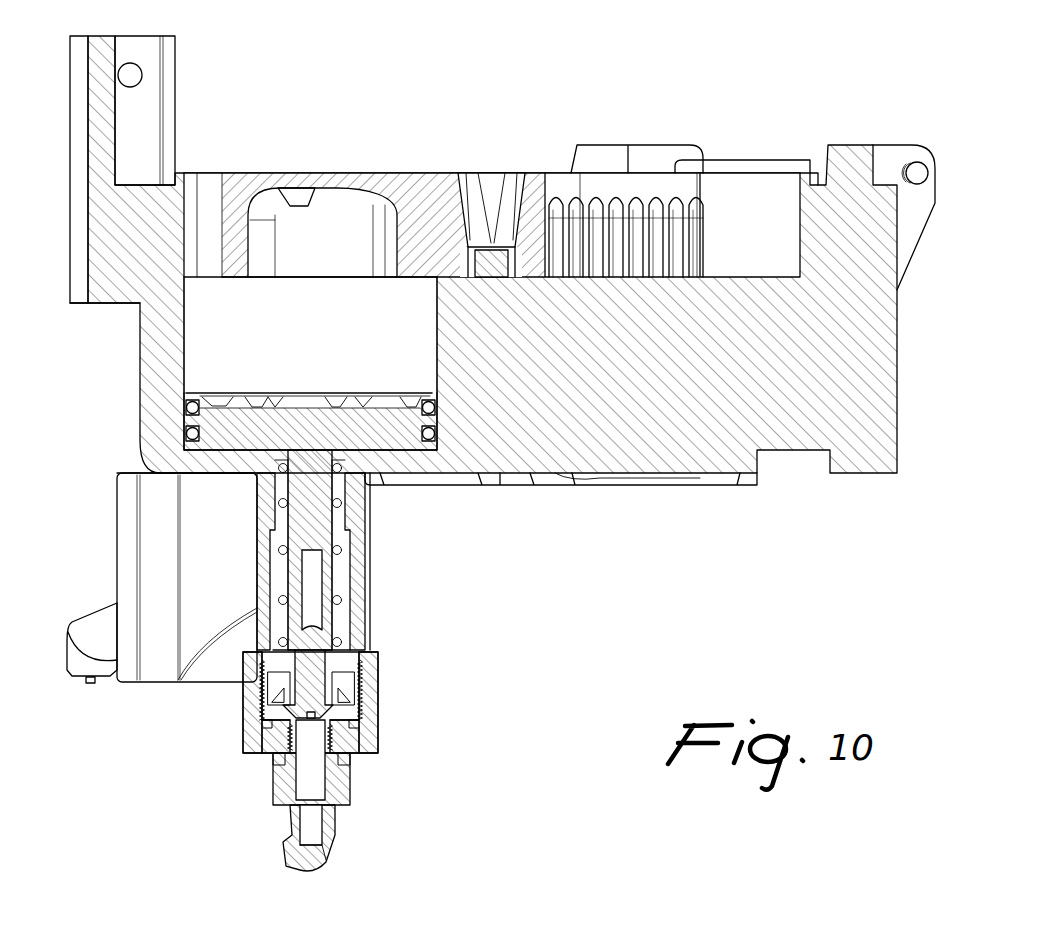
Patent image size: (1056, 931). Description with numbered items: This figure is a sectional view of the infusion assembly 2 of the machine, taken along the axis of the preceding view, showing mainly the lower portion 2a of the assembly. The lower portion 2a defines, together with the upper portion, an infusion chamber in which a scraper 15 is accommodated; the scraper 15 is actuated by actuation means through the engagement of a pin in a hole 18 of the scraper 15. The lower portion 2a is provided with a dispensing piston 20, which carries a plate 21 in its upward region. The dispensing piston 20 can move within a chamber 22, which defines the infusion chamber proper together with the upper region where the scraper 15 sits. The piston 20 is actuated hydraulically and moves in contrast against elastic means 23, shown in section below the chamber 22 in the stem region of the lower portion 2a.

The infusion assembly 2 is at (543, 260).
The lower portion 2a is at (848, 332).
The scraper 15 is at (392, 183).
The hole 18 is at (478, 183).
The dispensing piston 20 is at (228, 425).
The plate 21 is at (280, 392).
The chamber 22 is at (200, 313).
The elastic means 23 is at (340, 570).